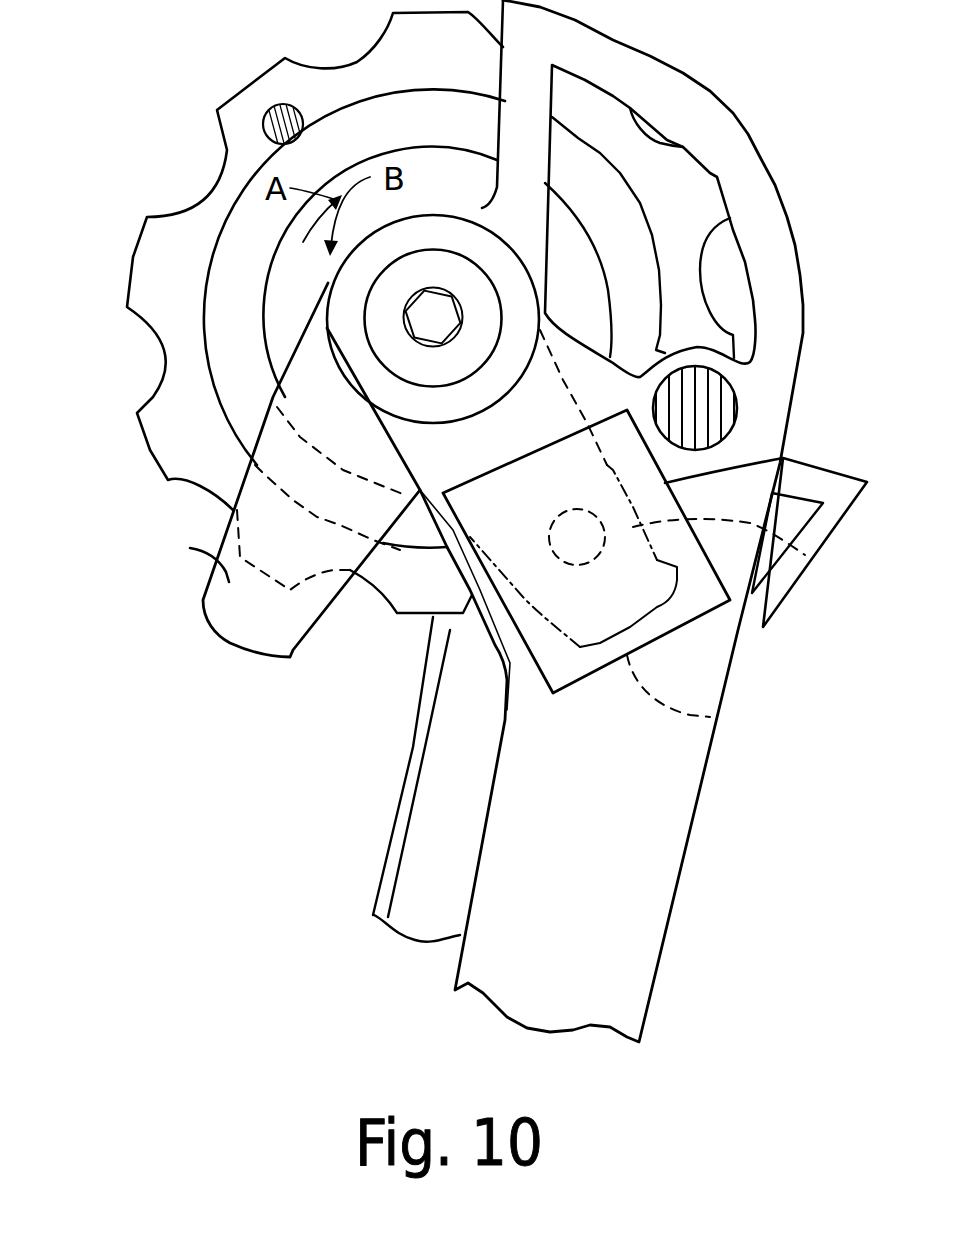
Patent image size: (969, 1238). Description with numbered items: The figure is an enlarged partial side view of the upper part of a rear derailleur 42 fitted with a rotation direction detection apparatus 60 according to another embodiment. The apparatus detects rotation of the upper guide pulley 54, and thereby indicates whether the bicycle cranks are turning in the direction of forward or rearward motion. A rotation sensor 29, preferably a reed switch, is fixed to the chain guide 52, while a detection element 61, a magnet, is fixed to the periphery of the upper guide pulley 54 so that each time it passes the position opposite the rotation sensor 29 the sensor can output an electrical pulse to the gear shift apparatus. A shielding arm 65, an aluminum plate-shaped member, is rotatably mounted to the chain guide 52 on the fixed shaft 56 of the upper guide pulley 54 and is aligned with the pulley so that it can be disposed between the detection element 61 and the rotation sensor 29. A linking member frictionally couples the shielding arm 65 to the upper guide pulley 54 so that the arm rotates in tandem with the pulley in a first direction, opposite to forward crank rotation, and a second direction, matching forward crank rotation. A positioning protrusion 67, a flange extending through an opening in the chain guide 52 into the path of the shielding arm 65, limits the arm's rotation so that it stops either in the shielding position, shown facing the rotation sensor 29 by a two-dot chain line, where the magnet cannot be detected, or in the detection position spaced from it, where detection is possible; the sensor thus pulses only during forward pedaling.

The rear derailleur 42 is at (150, 127).
The upper guide pulley 54 is at (155, 272).
The fixed shaft 56 is at (447, 385).
The detection element 61 is at (268, 110).
The rotation direction detection apparatus 60 is at (260, 687).
The chain guide 52 is at (682, 800).
The rotation sensor 29 is at (873, 394).
The positioning protrusion 67 is at (907, 550).
The shielding arm 65 is at (233, 575).